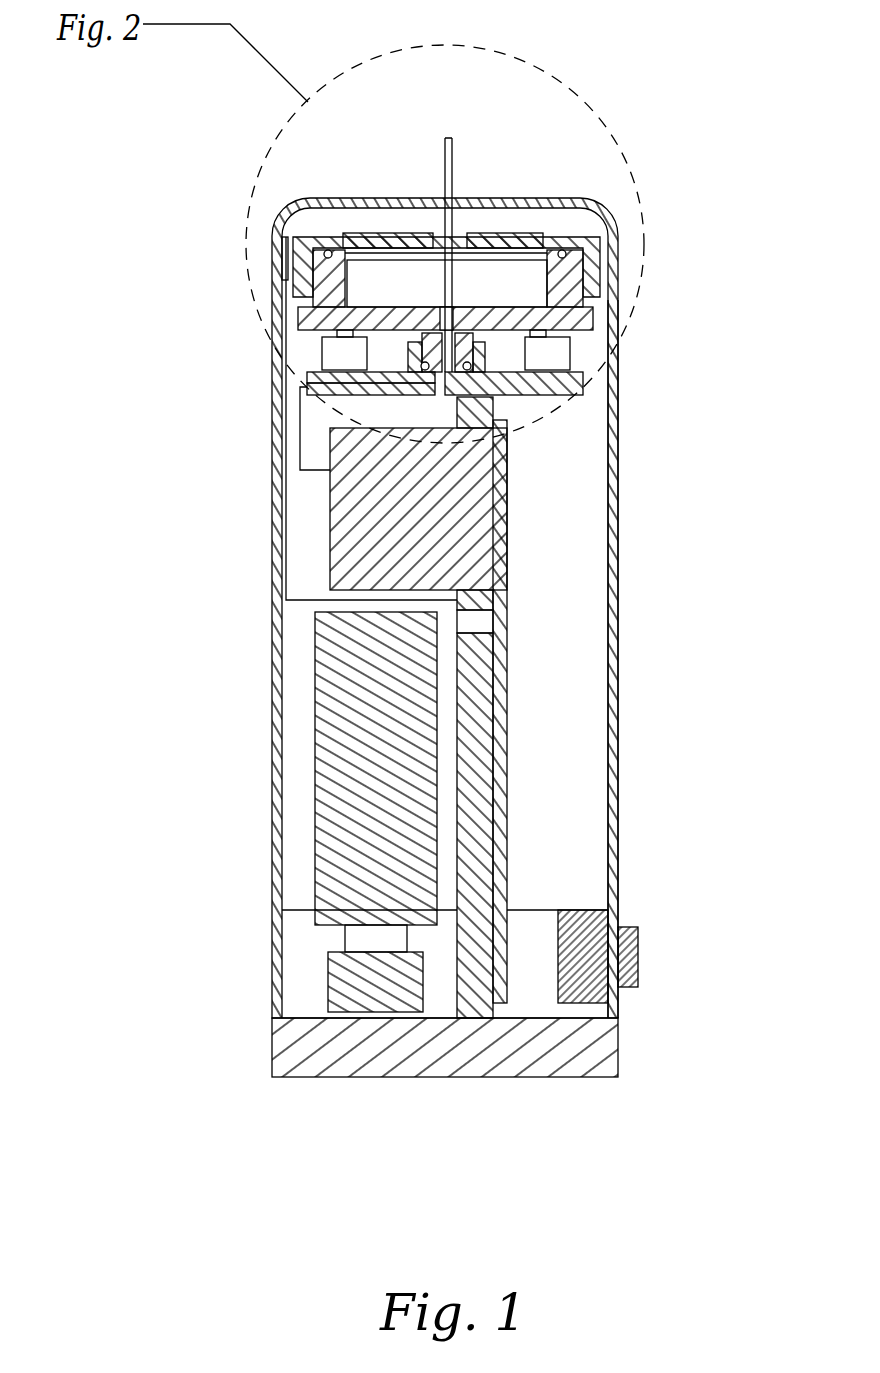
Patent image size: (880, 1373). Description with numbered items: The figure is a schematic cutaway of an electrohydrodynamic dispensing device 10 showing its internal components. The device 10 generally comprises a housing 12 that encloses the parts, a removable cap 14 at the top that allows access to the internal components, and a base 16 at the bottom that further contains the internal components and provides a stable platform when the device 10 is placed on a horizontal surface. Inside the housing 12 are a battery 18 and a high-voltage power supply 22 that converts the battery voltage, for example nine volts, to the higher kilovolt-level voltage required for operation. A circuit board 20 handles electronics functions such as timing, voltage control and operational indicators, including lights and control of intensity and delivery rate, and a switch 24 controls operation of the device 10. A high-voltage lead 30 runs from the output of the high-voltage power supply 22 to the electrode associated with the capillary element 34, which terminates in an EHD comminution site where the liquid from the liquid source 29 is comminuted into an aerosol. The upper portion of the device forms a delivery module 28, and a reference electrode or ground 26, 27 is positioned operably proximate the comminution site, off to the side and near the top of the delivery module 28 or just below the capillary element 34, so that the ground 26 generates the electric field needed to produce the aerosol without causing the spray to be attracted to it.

The dispensing device 10 is at (720, 90).
The housing 12 is at (636, 508).
The removable cap 14 is at (618, 777).
The base 16 is at (620, 1043).
The battery 18 is at (315, 830).
The circuit board 20 is at (505, 870).
The high-voltage power supply 22 is at (333, 495).
The switch 24 is at (638, 947).
The ground 26 is at (283, 268).
The ground 27 is at (287, 540).
The delivery module 28 is at (557, 226).
The liquid source 29 is at (530, 288).
The high-voltage lead 30 is at (302, 413).
The capillary element 34 is at (450, 160).